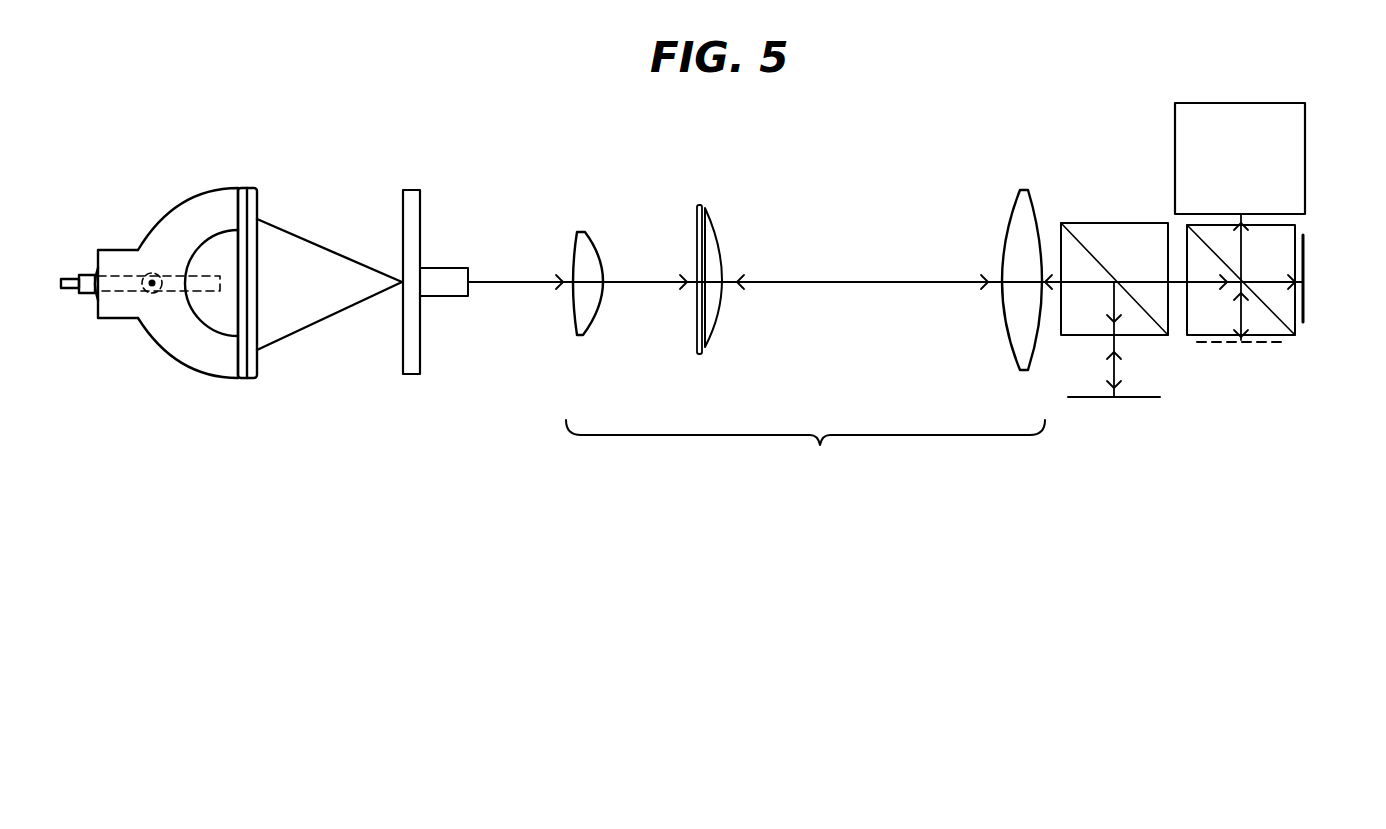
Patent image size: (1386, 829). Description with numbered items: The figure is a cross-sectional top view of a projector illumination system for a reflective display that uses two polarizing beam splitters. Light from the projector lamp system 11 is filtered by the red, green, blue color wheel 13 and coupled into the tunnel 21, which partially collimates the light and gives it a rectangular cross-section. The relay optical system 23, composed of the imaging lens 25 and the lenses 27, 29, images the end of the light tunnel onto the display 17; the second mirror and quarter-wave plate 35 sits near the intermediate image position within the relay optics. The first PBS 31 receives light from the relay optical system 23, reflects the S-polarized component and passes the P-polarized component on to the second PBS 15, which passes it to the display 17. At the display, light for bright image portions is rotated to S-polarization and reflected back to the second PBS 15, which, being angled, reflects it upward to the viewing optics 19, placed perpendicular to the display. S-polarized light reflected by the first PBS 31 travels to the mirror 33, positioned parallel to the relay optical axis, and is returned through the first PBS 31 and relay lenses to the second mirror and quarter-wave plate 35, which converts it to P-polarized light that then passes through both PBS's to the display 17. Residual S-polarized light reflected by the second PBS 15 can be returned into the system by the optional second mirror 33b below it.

The projector lamp system 11 is at (175, 360).
The color wheel 13 is at (403, 363).
The tunnel 21 is at (448, 268).
The relay optical system 23 is at (805, 452).
The imaging lens 25 is at (574, 340).
The lens 27 is at (708, 346).
The lens 29 is at (1022, 370).
The first PBS 31 is at (1113, 223).
The mirror 33 is at (1143, 397).
The second mirror 33b is at (1237, 345).
The second mirror and quarter-wave plate 35 is at (697, 234).
The second PBS 15 is at (1297, 333).
The display 17 is at (1305, 292).
The viewing optics 19 is at (1305, 128).